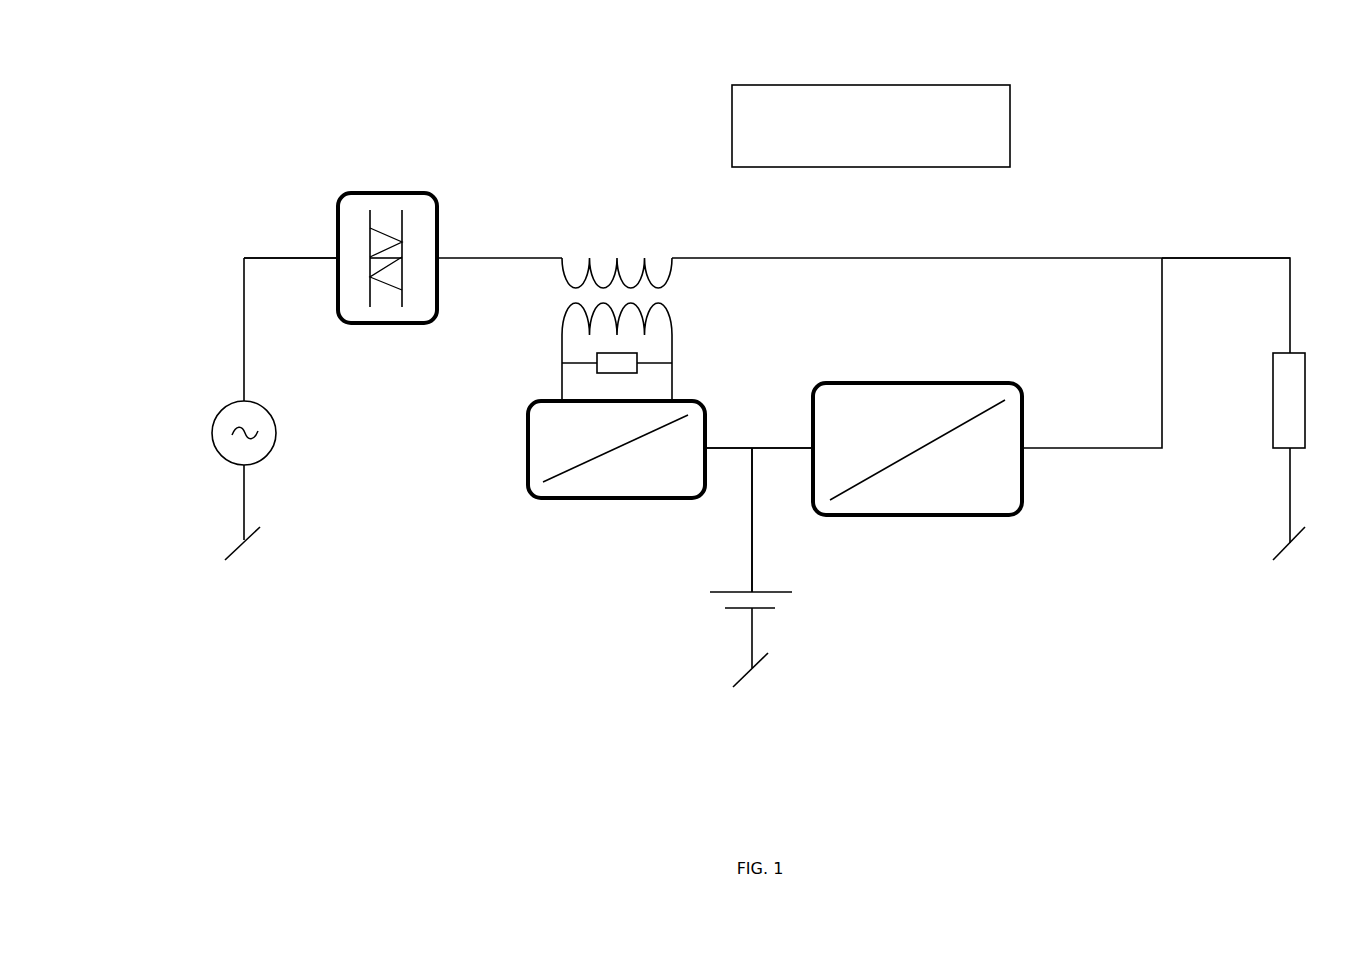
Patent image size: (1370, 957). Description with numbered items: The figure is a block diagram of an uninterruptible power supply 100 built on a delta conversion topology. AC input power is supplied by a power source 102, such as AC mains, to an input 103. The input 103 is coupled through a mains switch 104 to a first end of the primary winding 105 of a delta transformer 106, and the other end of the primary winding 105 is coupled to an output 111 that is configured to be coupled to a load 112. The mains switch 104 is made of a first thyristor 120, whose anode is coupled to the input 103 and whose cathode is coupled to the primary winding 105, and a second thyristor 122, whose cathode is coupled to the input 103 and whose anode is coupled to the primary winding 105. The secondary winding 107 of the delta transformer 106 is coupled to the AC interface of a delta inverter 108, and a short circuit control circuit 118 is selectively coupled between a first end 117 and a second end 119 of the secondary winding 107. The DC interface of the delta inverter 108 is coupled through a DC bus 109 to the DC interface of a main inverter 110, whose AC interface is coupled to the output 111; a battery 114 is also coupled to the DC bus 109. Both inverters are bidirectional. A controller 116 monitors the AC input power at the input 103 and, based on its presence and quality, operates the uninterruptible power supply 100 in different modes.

The uninterruptible power supply 100 is at (234, 110).
The power source 102 is at (233, 413).
The input 103 is at (285, 257).
The mains switch 104 is at (421, 257).
The primary winding 105 is at (560, 268).
The delta transformer 106 is at (626, 298).
The secondary winding 107 is at (562, 316).
The delta inverter 108 is at (543, 487).
The DC bus 109 is at (743, 447).
The main inverter 110 is at (1012, 502).
The output 111 is at (1220, 258).
The load 112 is at (1295, 378).
The battery 114 is at (760, 590).
The controller 116 is at (871, 126).
The first end of the secondary winding 117 is at (562, 353).
The short circuit control circuit 118 is at (628, 364).
The second end of the secondary winding 119 is at (672, 352).
The first thyristor 120 is at (380, 242).
The second thyristor 122 is at (397, 272).